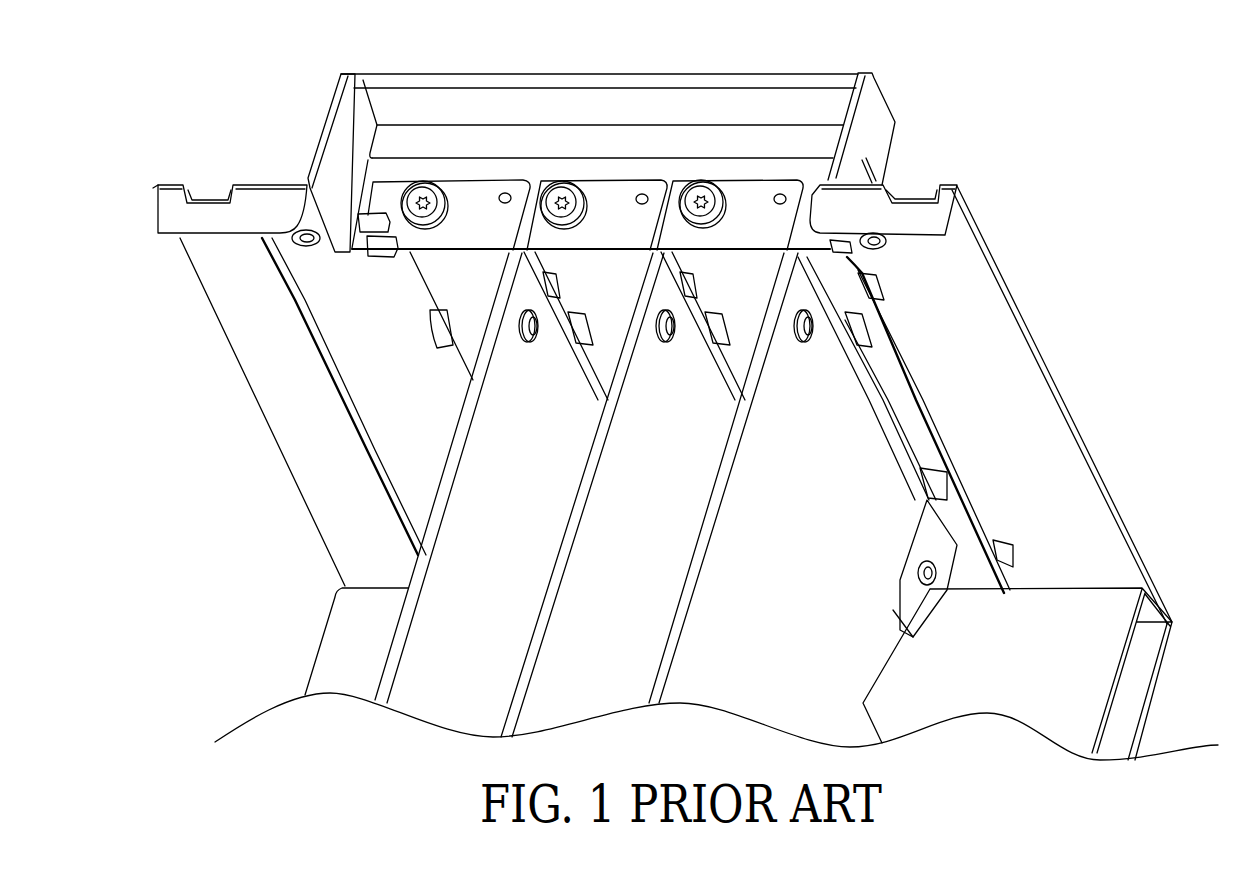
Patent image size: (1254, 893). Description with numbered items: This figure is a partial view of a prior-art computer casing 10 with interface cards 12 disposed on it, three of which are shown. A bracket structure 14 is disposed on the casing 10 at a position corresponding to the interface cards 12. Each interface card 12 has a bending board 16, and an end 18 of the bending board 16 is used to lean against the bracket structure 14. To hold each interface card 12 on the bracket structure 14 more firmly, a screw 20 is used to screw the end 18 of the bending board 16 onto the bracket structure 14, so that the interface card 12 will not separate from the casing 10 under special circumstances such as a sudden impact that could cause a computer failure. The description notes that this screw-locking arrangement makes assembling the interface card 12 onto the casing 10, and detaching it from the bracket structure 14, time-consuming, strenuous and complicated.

The casing 10 is at (1015, 230).
The interface card 12 is at (820, 528).
The bracket structure 14 is at (768, 167).
The bending board 16 is at (737, 300).
The end of the bending board 18 is at (733, 195).
The screw 20 is at (694, 183).